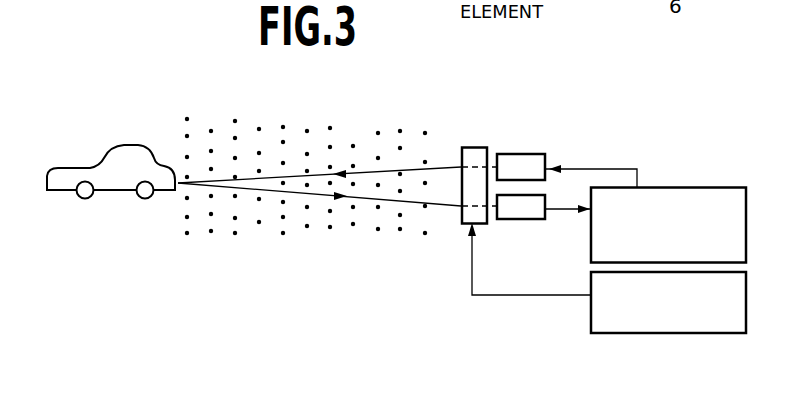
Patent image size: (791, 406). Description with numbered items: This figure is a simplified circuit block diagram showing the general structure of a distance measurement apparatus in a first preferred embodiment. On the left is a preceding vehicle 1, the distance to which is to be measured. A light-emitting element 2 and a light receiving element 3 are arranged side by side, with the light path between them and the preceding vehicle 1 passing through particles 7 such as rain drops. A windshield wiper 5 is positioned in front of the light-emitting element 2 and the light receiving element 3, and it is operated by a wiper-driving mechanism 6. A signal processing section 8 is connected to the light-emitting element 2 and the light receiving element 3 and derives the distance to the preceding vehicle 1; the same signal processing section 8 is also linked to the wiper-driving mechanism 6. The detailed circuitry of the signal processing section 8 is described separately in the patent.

The preceding vehicle 1 is at (133, 143).
The light-emitting element 2 is at (512, 154).
The light receiving element 3 is at (512, 220).
The windshield wiper 5 is at (476, 147).
The wiper-driving mechanism 6 is at (683, 333).
The particles 7 is at (330, 128).
The signal processing section 8 is at (698, 187).